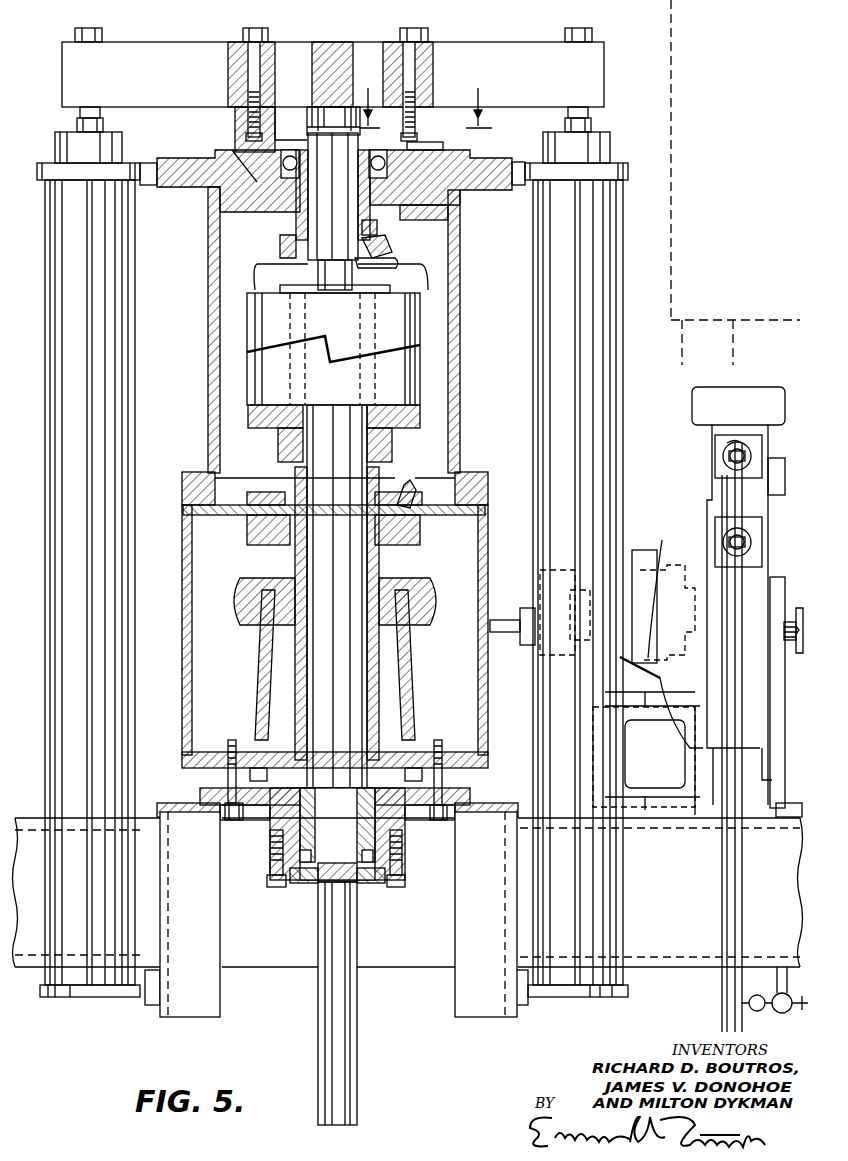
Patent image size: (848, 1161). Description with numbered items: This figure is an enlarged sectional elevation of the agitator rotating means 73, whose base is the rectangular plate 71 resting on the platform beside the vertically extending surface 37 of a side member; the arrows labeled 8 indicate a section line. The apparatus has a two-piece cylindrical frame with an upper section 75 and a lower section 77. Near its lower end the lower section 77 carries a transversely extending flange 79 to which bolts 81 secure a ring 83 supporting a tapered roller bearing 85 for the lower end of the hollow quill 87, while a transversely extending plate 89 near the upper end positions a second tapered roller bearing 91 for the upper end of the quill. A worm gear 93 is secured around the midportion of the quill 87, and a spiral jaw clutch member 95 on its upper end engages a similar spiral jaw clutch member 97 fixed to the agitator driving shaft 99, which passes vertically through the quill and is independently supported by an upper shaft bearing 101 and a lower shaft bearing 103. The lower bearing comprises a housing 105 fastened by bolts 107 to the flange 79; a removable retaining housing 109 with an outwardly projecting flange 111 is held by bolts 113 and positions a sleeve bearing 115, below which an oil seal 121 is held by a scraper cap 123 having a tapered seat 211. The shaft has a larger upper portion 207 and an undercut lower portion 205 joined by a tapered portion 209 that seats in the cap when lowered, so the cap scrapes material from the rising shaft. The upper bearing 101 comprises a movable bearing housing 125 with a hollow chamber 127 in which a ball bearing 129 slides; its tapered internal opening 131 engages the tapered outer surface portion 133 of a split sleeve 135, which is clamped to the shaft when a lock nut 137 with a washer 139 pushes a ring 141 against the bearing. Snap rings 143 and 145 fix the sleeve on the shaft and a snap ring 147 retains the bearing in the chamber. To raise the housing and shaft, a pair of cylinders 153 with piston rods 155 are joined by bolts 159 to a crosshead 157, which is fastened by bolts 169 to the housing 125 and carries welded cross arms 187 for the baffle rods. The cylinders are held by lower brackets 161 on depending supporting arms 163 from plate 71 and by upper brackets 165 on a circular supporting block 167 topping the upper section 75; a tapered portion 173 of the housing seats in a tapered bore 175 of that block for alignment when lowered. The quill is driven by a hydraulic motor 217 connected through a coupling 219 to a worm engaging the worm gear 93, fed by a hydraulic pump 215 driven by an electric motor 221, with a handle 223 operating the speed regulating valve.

The section line 8 is at (426, 94).
The vertically extending surface 37 is at (233, 966).
The rectangular plate 71 is at (168, 803).
The agitator rotating means 73 is at (183, 345).
The upper frame section 75 is at (460, 233).
The lower frame section 77 is at (488, 530).
The transversely extending flange 79 is at (480, 764).
The bolts 81 is at (267, 776).
The ring 83 is at (405, 775).
The tapered roller bearing 85 is at (380, 720).
The hollow quill 87 is at (292, 668).
The transversely extending plate 89 is at (430, 515).
The second tapered roller bearing 91 is at (262, 536).
The worm gear 93 is at (432, 612).
The spiral jaw clutch member 95 is at (415, 390).
The spiral jaw clutch member 97 is at (418, 322).
The agitator driving shaft 99 is at (330, 470).
The upper shaft bearing 101 is at (274, 224).
The lower shaft bearing 103 is at (264, 846).
The housing 105 is at (470, 792).
The bolts 107 is at (236, 820).
The retaining housing 109 is at (385, 832).
The outwardly projecting flange 111 is at (403, 862).
The bolts 113 is at (400, 884).
The sleeve bearing 115 is at (314, 827).
The oil seal 121 is at (315, 853).
The scraper cap 123 is at (370, 883).
The movable bearing housing 125 is at (240, 115).
The hollow chamber 127 is at (287, 112).
The ball bearing 129 is at (443, 146).
The tapered internal opening 131 is at (345, 200).
The tapered outer surface portion 133 is at (298, 168).
The sleeve 135 is at (380, 227).
The lock nut 137 is at (378, 266).
The washer 139 is at (390, 246).
The ring 141 is at (284, 240).
The snap ring 143 is at (312, 133).
The snap ring 145 is at (285, 264).
The snap ring 147 is at (262, 150).
The cylinders 153 is at (78, 255).
The piston rods 155 is at (80, 122).
The crosshead 157 is at (528, 52).
The bolts 159 is at (85, 33).
The brackets 161 is at (62, 997).
The depending supporting arms 163 is at (202, 1017).
The brackets 165 is at (50, 168).
The circular supporting block 167 is at (492, 160).
The bolts 169 is at (243, 32).
The tapered portion 173 is at (445, 200).
The tapered bore 175 is at (240, 188).
The cross arms 187 is at (328, 62).
The lower shaft portion 205 is at (325, 1082).
The upper shaft portion 207 is at (355, 408).
The tapered shaft portion 209 is at (335, 882).
The tapered seat 211 is at (305, 883).
The hydraulic pump 215 is at (715, 412).
The hydraulic motor 217 is at (644, 550).
The coupling 219 is at (558, 654).
The electric motor 221 is at (793, 630).
The handle 223 is at (748, 1005).